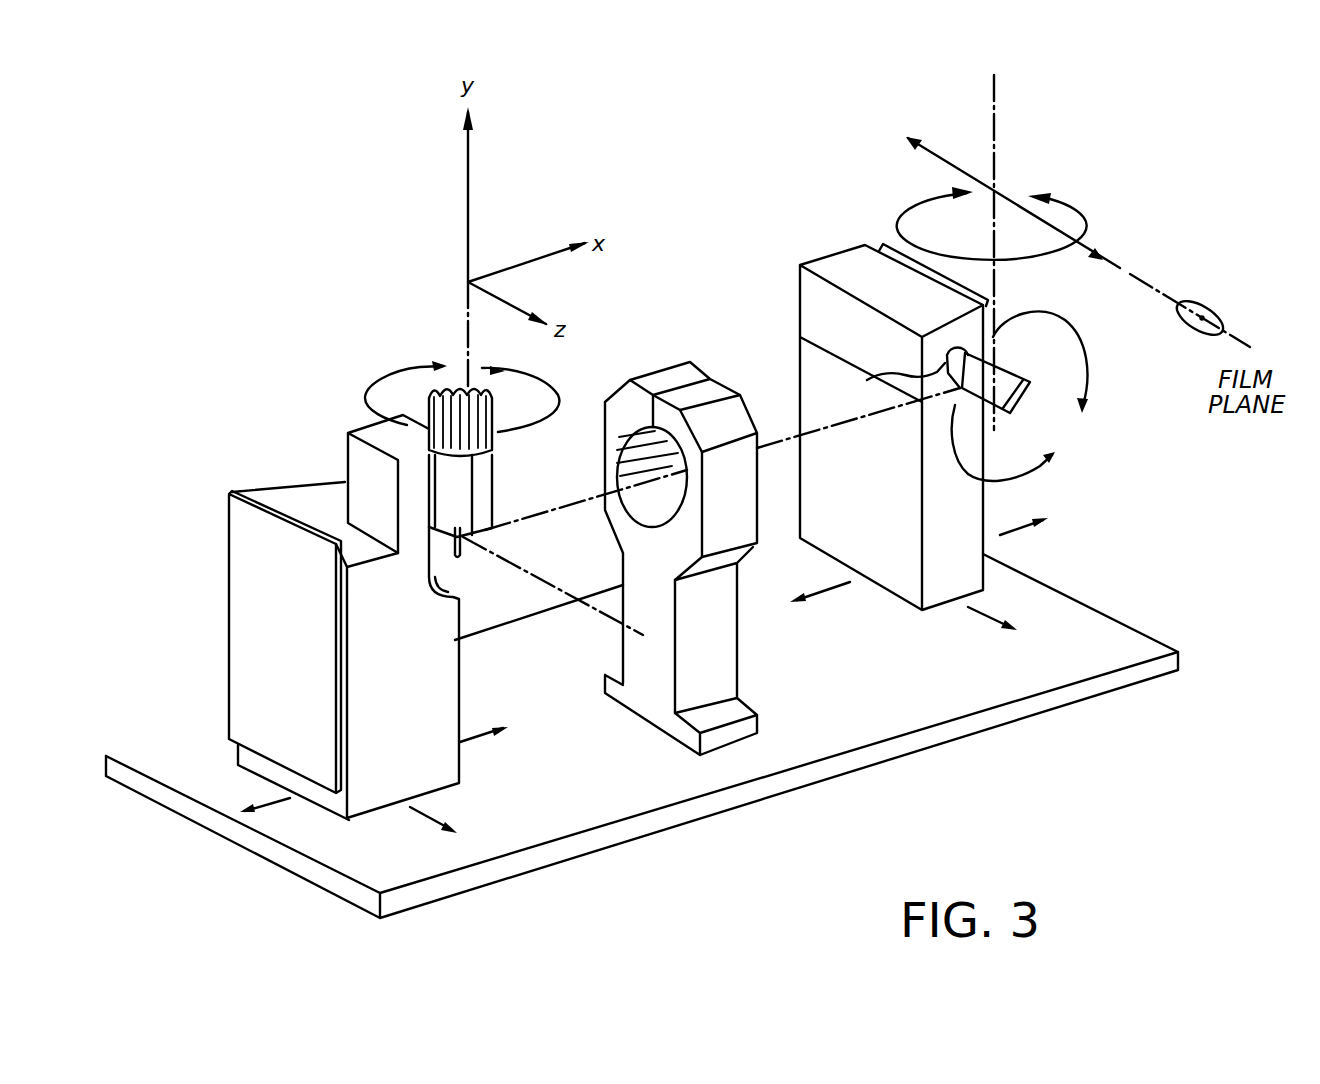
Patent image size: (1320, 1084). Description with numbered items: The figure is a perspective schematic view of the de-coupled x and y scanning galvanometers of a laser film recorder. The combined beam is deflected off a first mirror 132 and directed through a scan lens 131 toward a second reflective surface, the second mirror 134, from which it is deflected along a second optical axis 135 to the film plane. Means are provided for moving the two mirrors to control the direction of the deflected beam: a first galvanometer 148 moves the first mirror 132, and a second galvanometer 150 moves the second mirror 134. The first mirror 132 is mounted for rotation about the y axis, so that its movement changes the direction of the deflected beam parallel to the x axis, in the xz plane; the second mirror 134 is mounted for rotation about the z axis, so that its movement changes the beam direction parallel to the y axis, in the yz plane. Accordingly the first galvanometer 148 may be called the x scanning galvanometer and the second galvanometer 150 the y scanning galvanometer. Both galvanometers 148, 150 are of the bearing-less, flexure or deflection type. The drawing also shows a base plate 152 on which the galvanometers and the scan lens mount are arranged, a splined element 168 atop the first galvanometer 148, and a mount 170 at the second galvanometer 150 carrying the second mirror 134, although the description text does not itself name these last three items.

The scan lens 131 is at (735, 371).
The first mirror 132 is at (462, 550).
The second mirror 134 is at (1027, 408).
The second optical axis 135 is at (1000, 118).
The first galvanometer 148 is at (305, 392).
The second galvanometer 150 is at (805, 204).
The base plate 152 is at (963, 692).
The adjustment gear 168 is at (535, 418).
The mirror pivot mount 170 is at (867, 380).